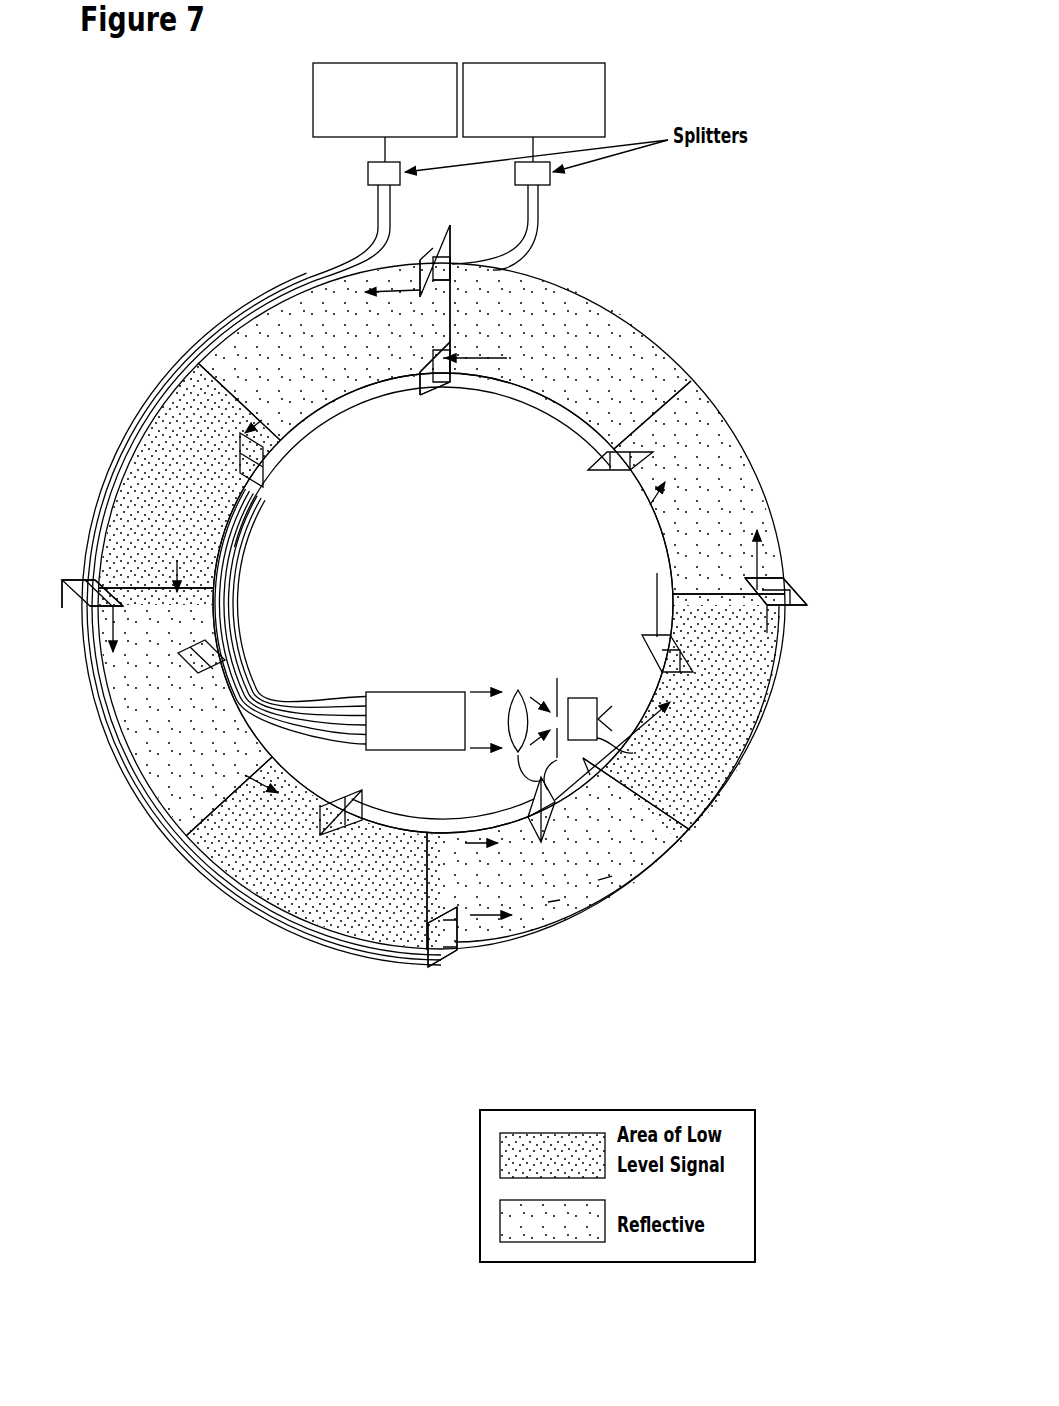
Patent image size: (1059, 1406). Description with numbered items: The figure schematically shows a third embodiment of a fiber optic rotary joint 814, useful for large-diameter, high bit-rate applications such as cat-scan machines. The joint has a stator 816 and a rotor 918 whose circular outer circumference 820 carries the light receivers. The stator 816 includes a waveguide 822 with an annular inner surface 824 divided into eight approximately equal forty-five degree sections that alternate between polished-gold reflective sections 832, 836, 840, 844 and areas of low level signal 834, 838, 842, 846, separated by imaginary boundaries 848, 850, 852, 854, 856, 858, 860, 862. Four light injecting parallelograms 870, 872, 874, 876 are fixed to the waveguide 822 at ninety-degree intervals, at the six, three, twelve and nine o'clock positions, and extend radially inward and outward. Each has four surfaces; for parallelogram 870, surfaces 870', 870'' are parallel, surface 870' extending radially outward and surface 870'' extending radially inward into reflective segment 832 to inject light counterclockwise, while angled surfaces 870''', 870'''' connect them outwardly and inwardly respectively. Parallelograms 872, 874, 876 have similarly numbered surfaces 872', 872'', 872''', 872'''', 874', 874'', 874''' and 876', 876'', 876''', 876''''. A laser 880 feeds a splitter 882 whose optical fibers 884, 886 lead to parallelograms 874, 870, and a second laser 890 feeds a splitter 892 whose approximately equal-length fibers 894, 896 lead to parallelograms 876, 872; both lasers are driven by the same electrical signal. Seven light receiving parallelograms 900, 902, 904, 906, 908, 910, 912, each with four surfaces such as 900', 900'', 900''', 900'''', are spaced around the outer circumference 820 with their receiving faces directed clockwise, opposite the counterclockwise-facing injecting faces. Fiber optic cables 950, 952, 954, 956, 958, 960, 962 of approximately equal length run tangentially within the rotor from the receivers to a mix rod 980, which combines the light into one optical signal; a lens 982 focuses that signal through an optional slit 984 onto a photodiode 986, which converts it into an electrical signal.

The fiber optic rotary joint 814 is at (700, 278).
The stator 816 is at (176, 765).
The circular outer circumference 820 is at (590, 785).
The waveguide 822 is at (598, 888).
The annular inner surface 824 is at (552, 907).
The reflective section 832 is at (630, 868).
The area of low level signal 834 is at (750, 720).
The reflective section 836 is at (737, 462).
The area of low level signal 838 is at (600, 305).
The reflective section 840 is at (290, 300).
The area of low level signal 842 is at (96, 525).
The reflective section 844 is at (135, 750).
The area of low level signal 846 is at (280, 907).
The imaginary boundary 848 is at (660, 808).
The imaginary boundary 850 is at (660, 592).
The imaginary boundary 852 is at (650, 414).
The imaginary boundary 854 is at (447, 316).
The imaginary boundary 856 is at (225, 382).
The imaginary boundary 858 is at (150, 600).
The imaginary boundary 860 is at (222, 792).
The imaginary boundary 862 is at (430, 872).
The light injecting parallelogram 870 is at (431, 975).
The light injecting surface 870' is at (391, 955).
The parallelogram surface 870'' is at (494, 945).
The parallelogram surface 870''' is at (456, 987).
The parallelogram surface 870'''' is at (413, 904).
The light injecting parallelogram 872 is at (806, 605).
The light injecting face 872' is at (804, 633).
The parallelogram surface 872'' is at (793, 549).
The parallelogram surface 872''' is at (821, 577).
The parallelogram surface 872'''' is at (745, 614).
The light injecting parallelogram 874 is at (464, 248).
The light injecting face 874' is at (483, 253).
The parallelogram surface 874'' is at (413, 264).
The parallelogram surface 874''' is at (470, 243).
The light injecting parallelogram 876 is at (62, 594).
The light injecting face 876' is at (57, 556).
The parallelogram surface 876'' is at (85, 645).
The parallelogram surface 876''' is at (82, 520).
The parallelogram surface 876'''' is at (65, 612).
The laser 880 is at (548, 63).
The splitter 882 is at (550, 175).
The optical fiber 884 is at (540, 200).
The optical fiber 886 is at (538, 226).
The laser 890 is at (395, 63).
The splitter 892 is at (368, 170).
The optical fiber 894 is at (378, 236).
The optical fiber 896 is at (378, 205).
The light receiving parallelogram 900 is at (456, 381).
The light receiving face 900' is at (488, 349).
The parallelogram surface 900'' is at (409, 412).
The parallelogram surface 900''' is at (407, 353).
The parallelogram surface 900'''' is at (461, 416).
The light receiving parallelogram 902 is at (272, 488).
The light receiving parallelogram 904 is at (242, 625).
The light receiving parallelogram 906 is at (337, 800).
The light receiving parallelogram 908 is at (542, 842).
The light receiving parallelogram 910 is at (680, 650).
The light receiving parallelogram 912 is at (612, 472).
The rotor 918 is at (443, 603).
The fiber optic cable 950 is at (355, 418).
The fiber optic cable 952 is at (242, 520).
The fiber optic cable 954 is at (248, 702).
The fiber optic cable 956 is at (385, 812).
The fiber optic cable 958 is at (588, 772).
The fiber optic cable 960 is at (655, 598).
The fiber optic cable 962 is at (590, 446).
The mix rod 980 is at (390, 692).
The lens 982 is at (518, 757).
The slit 984 is at (528, 782).
The photodiode 986 is at (630, 750).